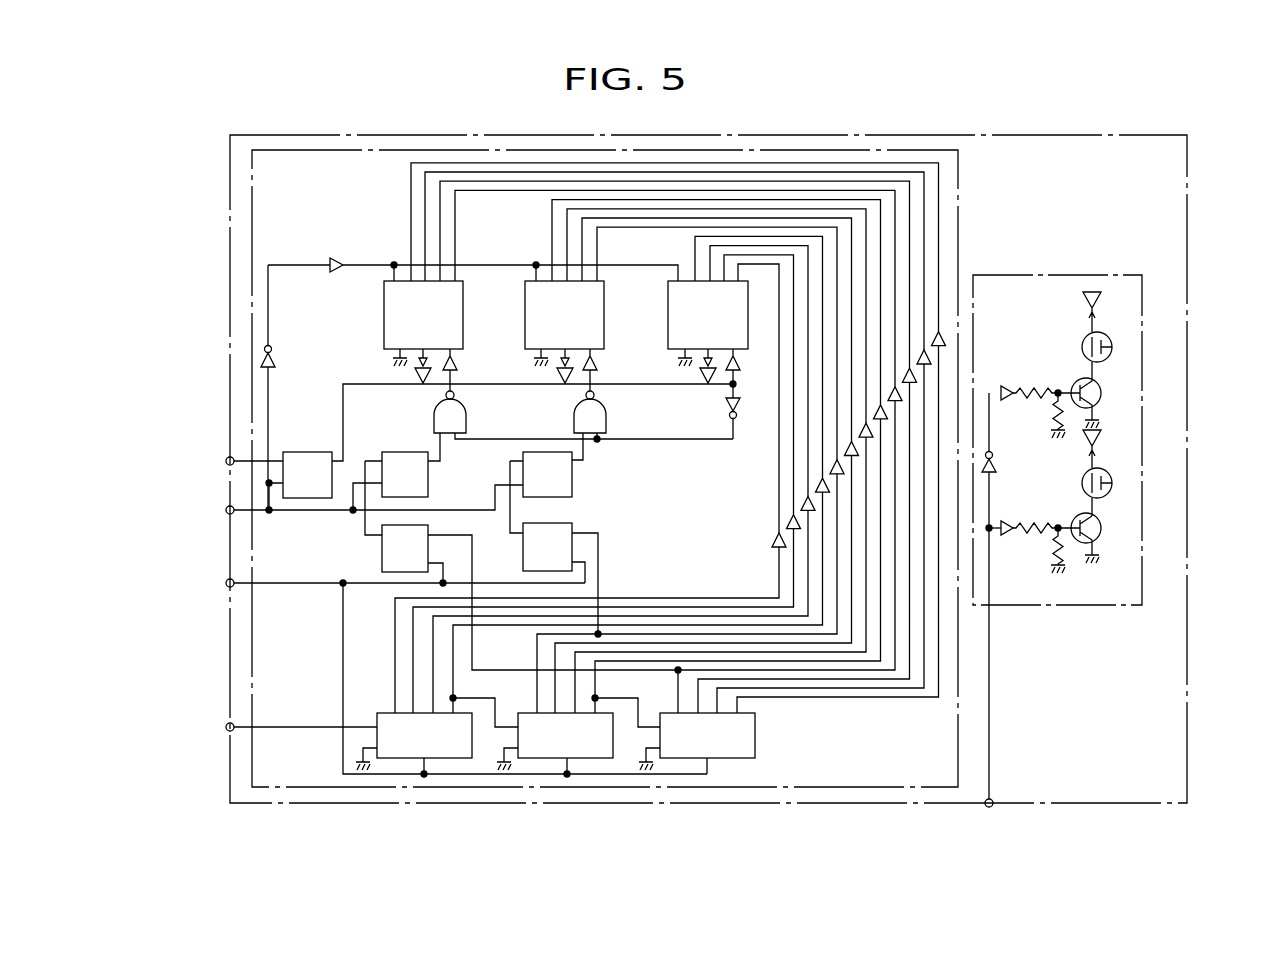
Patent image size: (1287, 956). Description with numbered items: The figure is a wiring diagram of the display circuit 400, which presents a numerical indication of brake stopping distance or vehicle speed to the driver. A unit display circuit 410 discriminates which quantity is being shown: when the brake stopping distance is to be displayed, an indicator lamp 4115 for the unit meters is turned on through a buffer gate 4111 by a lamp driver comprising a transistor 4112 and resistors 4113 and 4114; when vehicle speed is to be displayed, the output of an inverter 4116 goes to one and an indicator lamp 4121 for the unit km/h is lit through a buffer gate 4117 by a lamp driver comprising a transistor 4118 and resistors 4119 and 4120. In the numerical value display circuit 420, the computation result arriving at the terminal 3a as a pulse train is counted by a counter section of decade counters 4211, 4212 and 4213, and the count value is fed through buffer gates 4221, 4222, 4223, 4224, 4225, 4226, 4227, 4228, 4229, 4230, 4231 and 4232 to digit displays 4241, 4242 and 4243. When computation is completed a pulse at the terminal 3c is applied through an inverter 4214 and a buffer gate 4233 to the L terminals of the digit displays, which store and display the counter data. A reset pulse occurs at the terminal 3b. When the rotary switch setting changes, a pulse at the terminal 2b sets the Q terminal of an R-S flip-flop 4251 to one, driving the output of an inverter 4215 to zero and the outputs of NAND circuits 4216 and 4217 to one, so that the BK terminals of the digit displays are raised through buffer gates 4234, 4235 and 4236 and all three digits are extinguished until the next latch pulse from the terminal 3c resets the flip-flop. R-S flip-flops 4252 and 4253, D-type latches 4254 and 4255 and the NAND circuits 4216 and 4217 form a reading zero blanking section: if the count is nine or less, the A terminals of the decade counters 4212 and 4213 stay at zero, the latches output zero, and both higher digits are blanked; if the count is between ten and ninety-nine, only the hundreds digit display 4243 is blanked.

The display circuit 400 is at (230, 380).
The unit display circuit 410 is at (1030, 605).
The numerical value display circuit 420 is at (958, 210).
The terminal 2b is at (226, 461).
The terminal 3a is at (226, 727).
The terminal 3b is at (226, 583).
The terminal 3c is at (226, 510).
The buffer gate 4111 is at (1015, 543).
The transistor 4112 is at (1100, 540).
The resistor 4113 is at (1041, 519).
The resistor 4114 is at (1057, 562).
The indicator lamp 4115 is at (1112, 483).
The inverter 4116 is at (996, 466).
The buffer gate 4117 is at (1007, 400).
The transistor 4118 is at (1101, 393).
The resistor 4119 is at (1041, 385).
The resistor 4120 is at (1061, 432).
The indicator lamp 4121 is at (1112, 347).
The decade counter 4211 is at (377, 713).
The decade counter 4212 is at (588, 760).
The decade counter 4213 is at (756, 748).
The inverter 4214 is at (273, 361).
The inverter 4215 is at (724, 408).
The NAND circuit 4216 is at (574, 425).
The NAND circuit 4217 is at (433, 412).
The buffer gate 4221 is at (772, 543).
The buffer gate 4222 is at (787, 524).
The buffer gate 4223 is at (801, 504).
The buffer gate 4224 is at (816, 486).
The buffer gate 4225 is at (830, 469).
The buffer gate 4226 is at (845, 452).
The buffer gate 4227 is at (871, 427).
The buffer gate 4228 is at (888, 408).
The buffer gate 4229 is at (902, 390).
The buffer gate 4230 is at (916, 372).
The buffer gate 4231 is at (931, 353).
The buffer gate 4232 is at (945, 335).
The buffer gate 4233 is at (343, 243).
The buffer gate 4234 is at (728, 384).
The buffer gate 4235 is at (597, 365).
The buffer gate 4236 is at (456, 365).
The digit display 4241 is at (668, 290).
The digit display 4242 is at (525, 283).
The digit display 4243 is at (384, 316).
The R-S flip-flop 4251 is at (322, 452).
The R-S flip-flop 4252 is at (572, 527).
The R-S flip-flop 4253 is at (382, 556).
The D-type latch 4254 is at (572, 485).
The D-type latch 4255 is at (412, 452).